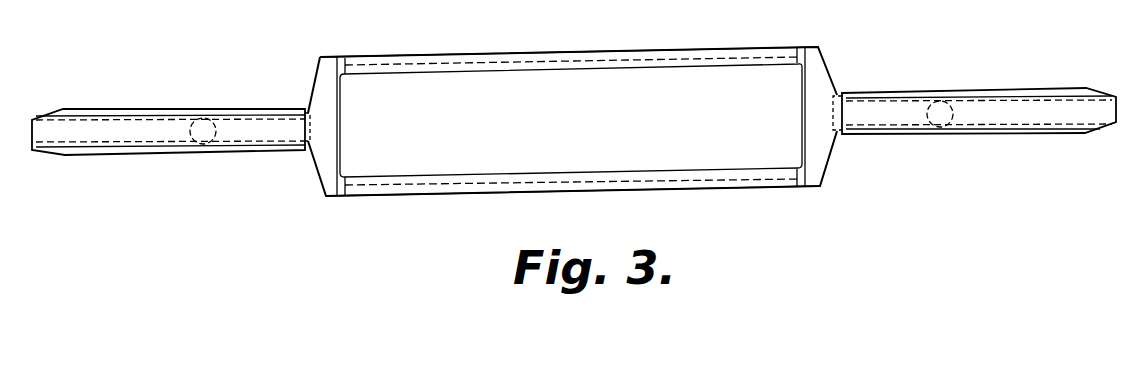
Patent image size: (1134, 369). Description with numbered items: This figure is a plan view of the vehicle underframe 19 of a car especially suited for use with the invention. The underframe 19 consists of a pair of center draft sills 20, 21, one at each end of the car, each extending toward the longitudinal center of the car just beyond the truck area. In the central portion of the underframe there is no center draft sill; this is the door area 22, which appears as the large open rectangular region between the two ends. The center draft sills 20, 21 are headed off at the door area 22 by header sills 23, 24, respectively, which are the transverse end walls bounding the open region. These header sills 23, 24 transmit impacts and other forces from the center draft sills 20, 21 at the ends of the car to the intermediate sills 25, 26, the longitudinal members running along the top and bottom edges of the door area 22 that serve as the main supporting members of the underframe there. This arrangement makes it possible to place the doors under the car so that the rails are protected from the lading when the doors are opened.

The vehicle underframe 19 is at (727, 197).
The center draft sill 20 is at (171, 132).
The center draft sill 21 is at (1018, 121).
The door area 22 is at (738, 135).
The header sill 23 is at (327, 198).
The header sill 24 is at (814, 55).
The intermediate sill 25 is at (423, 62).
The intermediate sill 26 is at (392, 193).